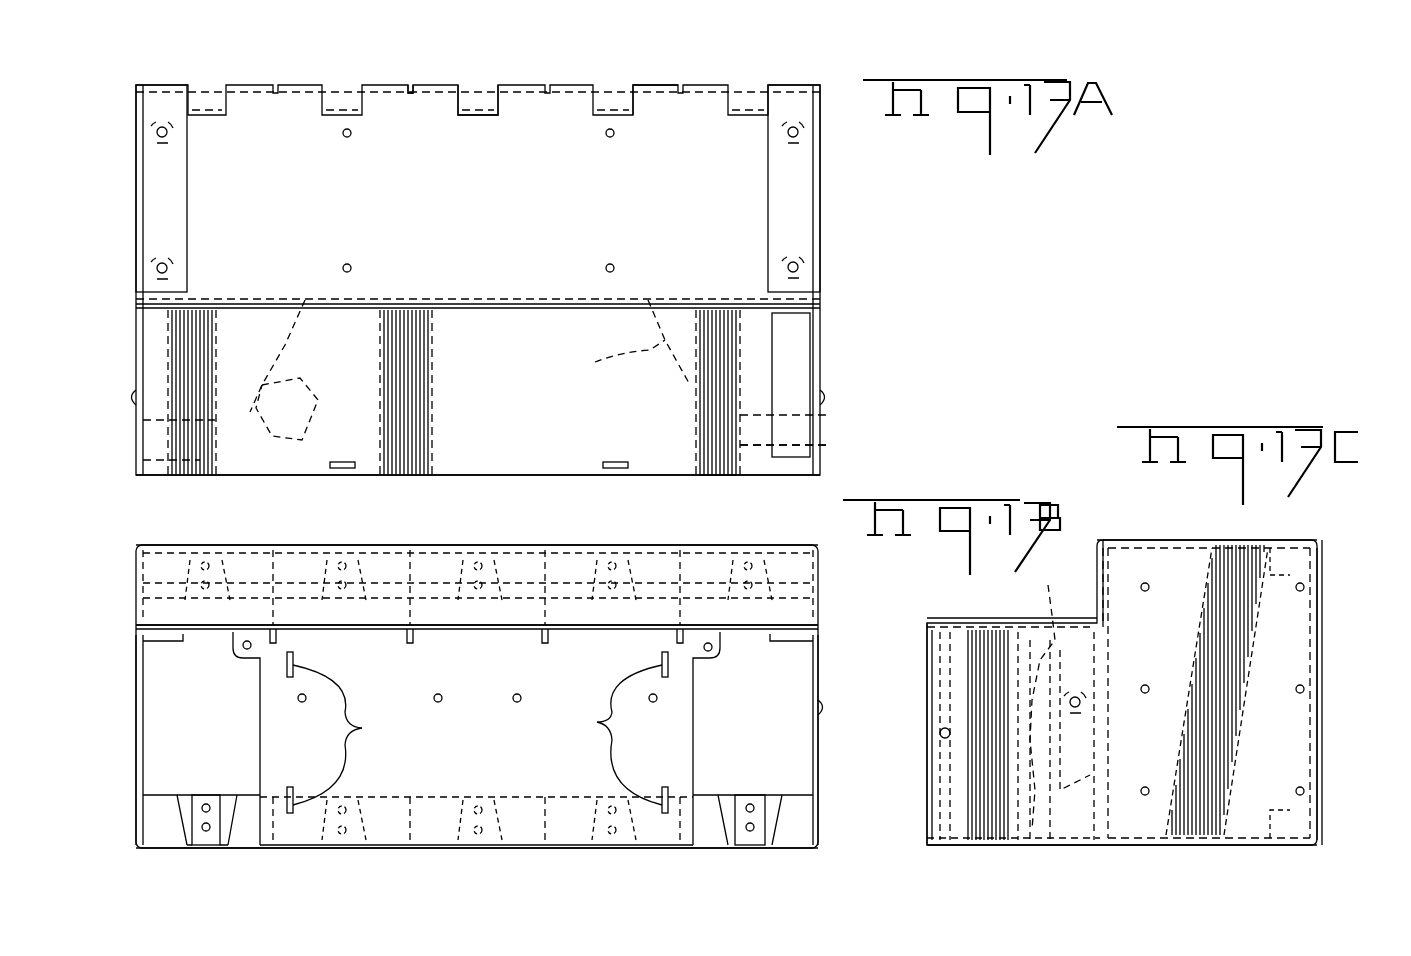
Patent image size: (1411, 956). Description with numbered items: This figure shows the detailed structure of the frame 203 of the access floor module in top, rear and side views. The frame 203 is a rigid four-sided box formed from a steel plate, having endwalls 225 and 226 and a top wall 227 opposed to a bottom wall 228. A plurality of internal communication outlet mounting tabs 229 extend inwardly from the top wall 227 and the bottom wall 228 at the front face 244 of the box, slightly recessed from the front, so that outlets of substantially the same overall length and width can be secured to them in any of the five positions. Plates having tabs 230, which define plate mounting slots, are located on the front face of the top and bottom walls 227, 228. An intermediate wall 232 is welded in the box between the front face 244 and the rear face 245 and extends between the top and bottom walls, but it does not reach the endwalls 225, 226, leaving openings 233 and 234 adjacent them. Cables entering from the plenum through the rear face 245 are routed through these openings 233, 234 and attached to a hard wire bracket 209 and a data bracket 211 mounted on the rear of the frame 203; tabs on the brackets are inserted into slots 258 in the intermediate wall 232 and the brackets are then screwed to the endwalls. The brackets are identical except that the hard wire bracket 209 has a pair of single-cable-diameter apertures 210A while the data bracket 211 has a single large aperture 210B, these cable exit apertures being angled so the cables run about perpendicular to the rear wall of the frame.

In FIG. 13A, the frame 203 is at (845, 267).
In FIG. 13B, the frame 203 is at (262, 525).
In FIG. 13C, the frame 203 is at (1125, 510).
In FIG. 13A, the hard wire bracket 209 is at (288, 413).
In FIG. 13A, the single-cable-diameter apertures 210A is at (305, 356).
In FIG. 13A, the large aperture 210B is at (617, 354).
In FIG. 13C, the large aperture 210B is at (992, 590).
In FIG. 13A, the data bracket 211 is at (822, 440).
In FIG. 13C, the data bracket 211 is at (942, 622).
In FIG. 13A, the endwall 225 is at (822, 348).
In FIG. 13B, the endwall 225 is at (822, 712).
In FIG. 13A, the endwall 226 is at (132, 190).
In FIG. 13B, the endwall 226 is at (138, 765).
In FIG. 13B, the top wall 227 is at (545, 545).
In FIG. 13C, the top wall 227 is at (1232, 540).
In FIG. 13B, the bottom wall 228 is at (545, 848).
In FIG. 13C, the bottom wall 228 is at (1165, 845).
In FIG. 13A, the internal communication outlet mounting tabs 229 is at (478, 120).
In FIG. 13B, the internal communication outlet mounting tabs 229 is at (220, 796).
In FIG. 13A, the tabs 230 is at (430, 86).
In FIG. 13B, the tabs 230 is at (170, 812).
In FIG. 13A, the intermediate wall 232 is at (485, 292).
In FIG. 13B, the intermediate wall 232 is at (517, 762).
In FIG. 13C, the intermediate wall 232 is at (1034, 850).
In FIG. 13A, the opening 233 is at (226, 290).
In FIG. 13B, the opening 233 is at (225, 700).
In FIG. 13A, the opening 234 is at (736, 290).
In FIG. 13B, the opening 234 is at (786, 700).
In FIG. 13A, the front face 244 is at (660, 86).
In FIG. 13C, the front face 244 is at (1318, 672).
In FIG. 13A, the rear face 245 is at (705, 475).
In FIG. 13C, the rear face 245 is at (928, 700).
In FIG. 13B, the slots 258 is at (477, 735).